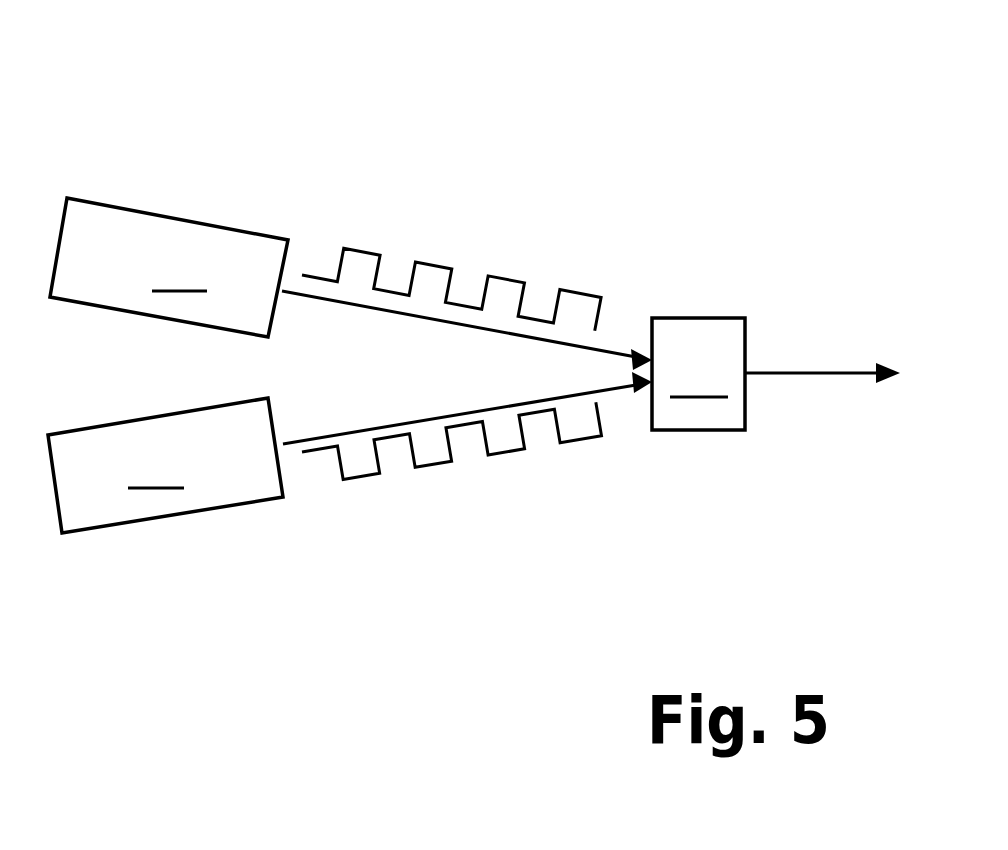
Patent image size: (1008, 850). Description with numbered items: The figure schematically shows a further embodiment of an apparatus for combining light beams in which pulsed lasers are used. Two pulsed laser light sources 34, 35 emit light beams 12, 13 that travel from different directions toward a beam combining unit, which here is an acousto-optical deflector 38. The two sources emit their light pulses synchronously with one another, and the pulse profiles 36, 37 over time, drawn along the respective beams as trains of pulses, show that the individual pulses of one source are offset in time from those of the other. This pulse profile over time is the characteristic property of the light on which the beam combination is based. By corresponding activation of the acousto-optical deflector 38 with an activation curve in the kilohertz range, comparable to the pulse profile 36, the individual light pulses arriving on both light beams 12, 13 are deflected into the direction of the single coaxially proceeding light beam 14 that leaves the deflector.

The light beam 12 is at (363, 305).
The light beam 13 is at (365, 428).
The coaxially proceeding light beam 14 is at (812, 371).
The pulsed laser light source 34 is at (169, 267).
The pulsed laser light source 35 is at (165, 465).
The pulse profile 36 is at (438, 263).
The pulse profile 37 is at (483, 462).
The acousto-optical deflector 38 is at (698, 374).